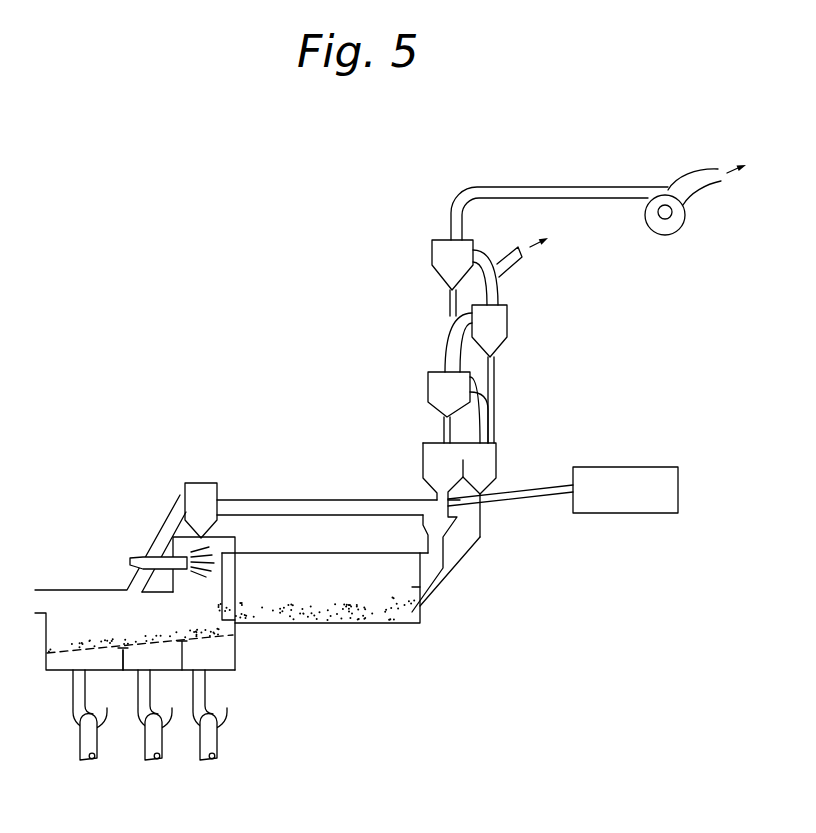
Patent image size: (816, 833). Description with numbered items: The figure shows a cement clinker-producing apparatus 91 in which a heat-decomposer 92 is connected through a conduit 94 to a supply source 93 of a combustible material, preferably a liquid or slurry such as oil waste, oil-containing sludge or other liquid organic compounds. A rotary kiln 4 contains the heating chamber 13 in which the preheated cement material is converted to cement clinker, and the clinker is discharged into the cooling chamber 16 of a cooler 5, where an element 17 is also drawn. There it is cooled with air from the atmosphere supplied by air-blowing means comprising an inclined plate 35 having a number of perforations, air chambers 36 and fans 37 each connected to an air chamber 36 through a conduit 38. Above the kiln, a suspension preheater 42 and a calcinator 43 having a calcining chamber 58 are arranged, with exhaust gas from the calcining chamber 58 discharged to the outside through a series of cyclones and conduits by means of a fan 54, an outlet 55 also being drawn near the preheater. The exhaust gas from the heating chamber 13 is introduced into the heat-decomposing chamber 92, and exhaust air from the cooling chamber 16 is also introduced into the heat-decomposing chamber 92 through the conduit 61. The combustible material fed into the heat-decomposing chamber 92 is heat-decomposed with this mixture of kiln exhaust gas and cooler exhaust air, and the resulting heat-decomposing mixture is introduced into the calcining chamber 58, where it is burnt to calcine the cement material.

The rotary kiln 4 is at (313, 656).
The cooler 5 is at (124, 545).
The heating chamber 13 is at (372, 624).
The cooling chamber 16 is at (73, 596).
The nozzle 17 is at (140, 557).
The inclined plate 35 is at (70, 658).
The air chamber 36 is at (145, 660).
The fan 37 is at (140, 723).
The conduit 38 is at (150, 698).
The suspension preheater 42 is at (502, 341).
The calcinator 43 is at (430, 438).
The fan 54 is at (683, 226).
The gas outlet 55 is at (522, 262).
The calcining chamber 58 is at (423, 466).
The conduit 61 is at (298, 520).
The apparatus 91 is at (224, 281).
The heat-decomposer 92 is at (459, 520).
The supply source 93 is at (634, 467).
The conduit 94 is at (527, 489).